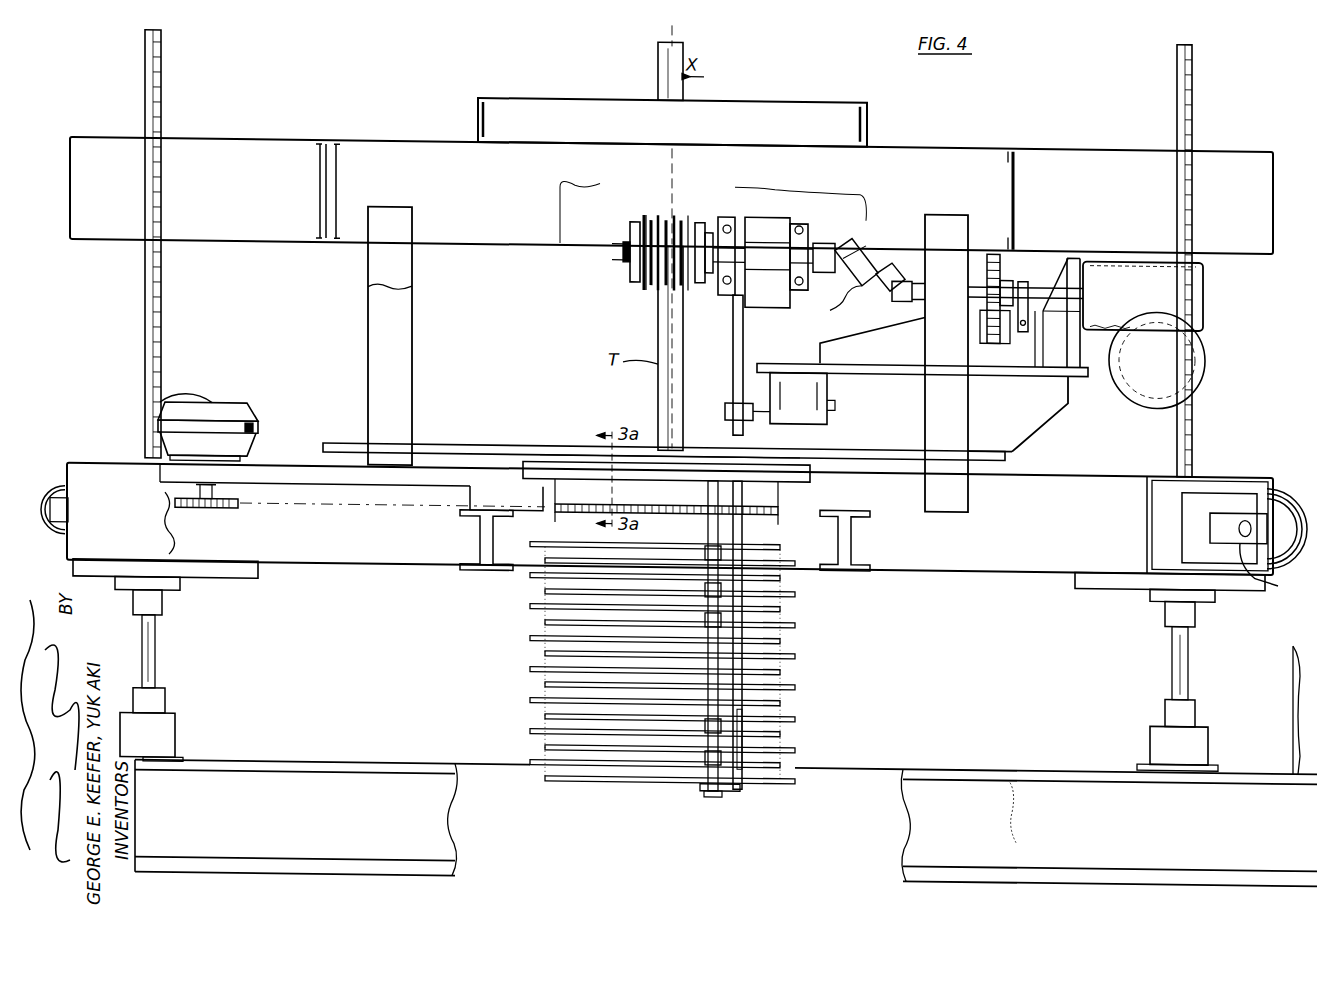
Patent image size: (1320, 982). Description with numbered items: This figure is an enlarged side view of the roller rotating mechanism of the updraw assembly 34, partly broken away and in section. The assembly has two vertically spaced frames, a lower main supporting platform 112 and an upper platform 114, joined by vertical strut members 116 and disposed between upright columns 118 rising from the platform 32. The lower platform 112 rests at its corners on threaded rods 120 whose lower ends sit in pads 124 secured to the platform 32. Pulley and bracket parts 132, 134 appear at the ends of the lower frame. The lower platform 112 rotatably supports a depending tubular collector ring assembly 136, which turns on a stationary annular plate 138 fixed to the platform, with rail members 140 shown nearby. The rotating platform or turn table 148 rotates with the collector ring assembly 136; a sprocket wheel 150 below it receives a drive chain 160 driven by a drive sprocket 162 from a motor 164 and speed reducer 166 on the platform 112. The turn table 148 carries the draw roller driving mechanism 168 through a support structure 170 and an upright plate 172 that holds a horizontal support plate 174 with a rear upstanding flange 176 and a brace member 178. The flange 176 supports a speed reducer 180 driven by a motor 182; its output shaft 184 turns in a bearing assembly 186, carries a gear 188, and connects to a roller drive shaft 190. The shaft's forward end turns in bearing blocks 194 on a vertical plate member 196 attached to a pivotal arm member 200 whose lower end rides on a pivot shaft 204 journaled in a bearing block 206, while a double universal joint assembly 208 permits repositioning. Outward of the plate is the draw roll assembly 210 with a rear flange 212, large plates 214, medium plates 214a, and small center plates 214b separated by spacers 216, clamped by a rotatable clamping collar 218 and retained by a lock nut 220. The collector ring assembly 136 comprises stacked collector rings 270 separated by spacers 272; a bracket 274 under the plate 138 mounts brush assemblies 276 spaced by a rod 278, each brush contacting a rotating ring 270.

The platform 32 is at (960, 758).
The updraw assembly 34 is at (1036, 106).
The lower main supporting platform 112 is at (128, 529).
The upper platform 114 is at (371, 136).
The vertical strut members 116 is at (368, 274).
The upright columns 118 is at (1293, 682).
The threaded rods 120 is at (145, 87).
The pads 124 is at (175, 736).
The pulley 132 is at (48, 520).
The pulley bracket 134 is at (1274, 568).
The collector ring assembly 136 is at (640, 645).
The stationary annular plate 138 is at (540, 462).
The I-beam rail 140 is at (480, 530).
The rotating platform 148 is at (450, 439).
The sprocket wheel 150 is at (555, 510).
The drive chain 160 is at (340, 495).
The drive sprocket 162 is at (228, 505).
The motor 164 is at (182, 392).
The speed reducer 166 is at (238, 412).
The draw roller driving mechanism 168 is at (1045, 255).
The support structure 170 is at (1063, 415).
The upright plate 172 is at (1040, 425).
The horizontal support plate 174 is at (1083, 363).
The upwardly extending flange 176 is at (1070, 245).
The brace member 178 is at (996, 354).
The speed reducer 180 is at (1138, 250).
The motor 182 is at (1205, 345).
The output shaft 184 is at (1045, 280).
The bearing assembly 186 is at (1020, 268).
The gear 188 is at (987, 248).
The roller drive shaft 190 is at (890, 240).
The bearing blocks 194 is at (822, 232).
The vertical plate member 196 is at (766, 212).
The pivotal arm member 200 is at (733, 386).
The pivot shaft 204 is at (725, 403).
The bearing block 206 is at (793, 393).
The double universal joint assembly 208 is at (860, 290).
The draw roll assembly 210 is at (628, 284).
The flange 212 is at (699, 274).
The large diameter plates 214 is at (650, 212).
The medium size diameter plates 214a is at (658, 207).
The small size diameter plates 214b is at (648, 207).
The spacers 216 is at (645, 268).
The rotatable clamping collar 218 is at (636, 274).
The lock nut 220 is at (623, 244).
The collector rings 270 is at (530, 630).
The spacers 272 is at (795, 616).
The bracket 274 is at (740, 782).
The brush assemblies 276 is at (705, 610).
The rod 278 is at (745, 687).